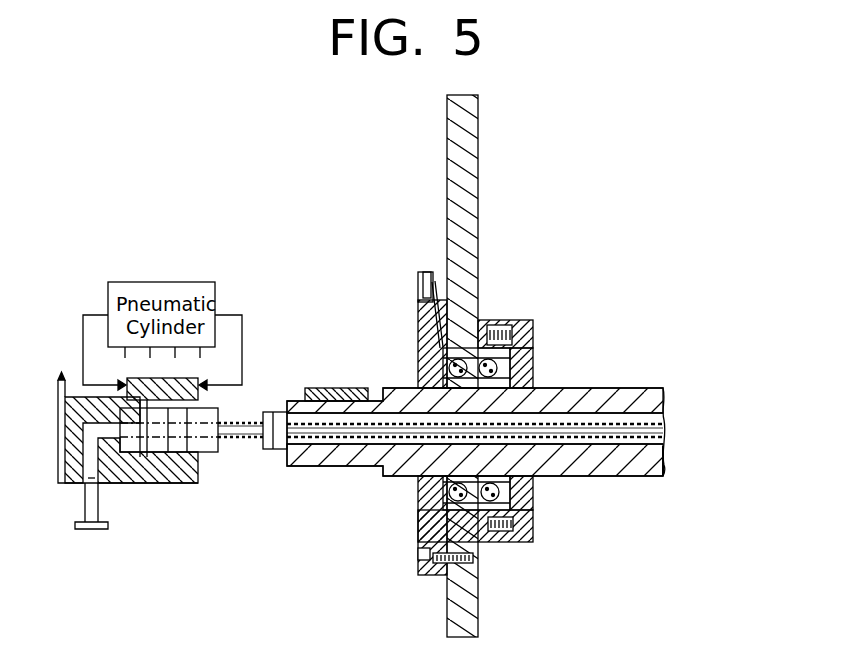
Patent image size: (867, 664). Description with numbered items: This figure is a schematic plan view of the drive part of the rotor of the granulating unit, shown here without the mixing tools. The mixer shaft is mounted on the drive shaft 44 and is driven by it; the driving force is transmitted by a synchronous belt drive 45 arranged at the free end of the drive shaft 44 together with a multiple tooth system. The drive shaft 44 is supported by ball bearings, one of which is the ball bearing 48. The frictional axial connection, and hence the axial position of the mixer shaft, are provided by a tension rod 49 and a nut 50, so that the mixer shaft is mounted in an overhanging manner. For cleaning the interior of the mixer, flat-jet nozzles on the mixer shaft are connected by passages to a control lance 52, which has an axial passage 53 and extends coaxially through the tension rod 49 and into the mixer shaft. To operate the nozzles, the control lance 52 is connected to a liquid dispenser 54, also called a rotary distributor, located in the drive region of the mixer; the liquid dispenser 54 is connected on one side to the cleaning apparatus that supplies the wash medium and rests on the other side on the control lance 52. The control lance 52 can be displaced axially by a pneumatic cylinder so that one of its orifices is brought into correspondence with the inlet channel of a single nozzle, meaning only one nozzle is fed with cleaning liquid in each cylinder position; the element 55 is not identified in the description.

The drive shaft 44 is at (655, 398).
The synchronous belt drive 45 is at (347, 388).
The ball bearing 48 is at (522, 363).
The tension rod 49 is at (655, 478).
The nut 50 is at (277, 412).
The control lance 52 is at (548, 442).
The axial passage 53 is at (241, 444).
The liquid dispenser 54 is at (150, 486).
The air port 55 is at (92, 534).